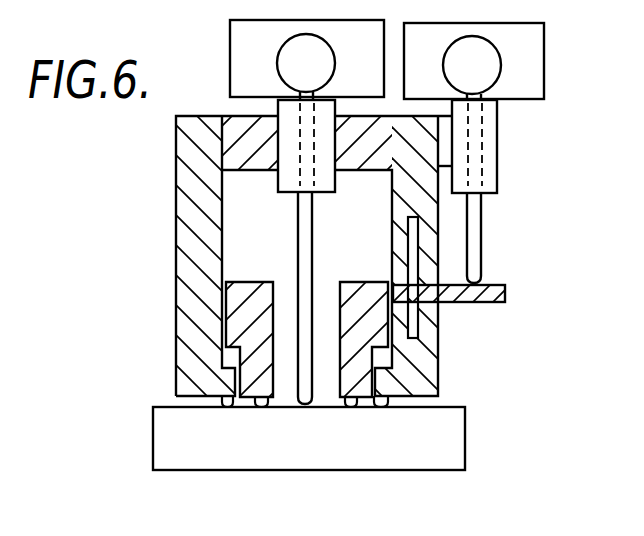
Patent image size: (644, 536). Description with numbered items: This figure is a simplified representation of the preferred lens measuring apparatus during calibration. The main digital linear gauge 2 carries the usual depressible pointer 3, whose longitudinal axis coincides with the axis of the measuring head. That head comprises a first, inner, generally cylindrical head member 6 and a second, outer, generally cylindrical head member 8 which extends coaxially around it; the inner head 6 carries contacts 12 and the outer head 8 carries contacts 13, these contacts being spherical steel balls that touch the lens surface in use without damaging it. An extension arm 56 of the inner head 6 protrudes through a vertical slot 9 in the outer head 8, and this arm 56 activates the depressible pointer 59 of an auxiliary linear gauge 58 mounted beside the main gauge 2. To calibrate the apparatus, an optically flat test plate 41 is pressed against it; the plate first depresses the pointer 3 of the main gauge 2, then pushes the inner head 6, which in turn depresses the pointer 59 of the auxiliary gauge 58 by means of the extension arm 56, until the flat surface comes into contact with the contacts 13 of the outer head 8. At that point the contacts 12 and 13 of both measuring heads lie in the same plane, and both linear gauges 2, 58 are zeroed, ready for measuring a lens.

The digital linear gauge 2 is at (230, 32).
The auxiliary linear gauge 58 is at (534, 38).
The second head member 8 is at (177, 193).
The depressible pointer 3 is at (303, 227).
The depressible pointer 59 is at (475, 237).
The extension arm 56 is at (505, 290).
The first head member 6 is at (240, 320).
The vertical slot 9 is at (414, 322).
The contacts 13 is at (228, 407).
The contacts 12 is at (261, 407).
The optically flat test plate 41 is at (435, 455).